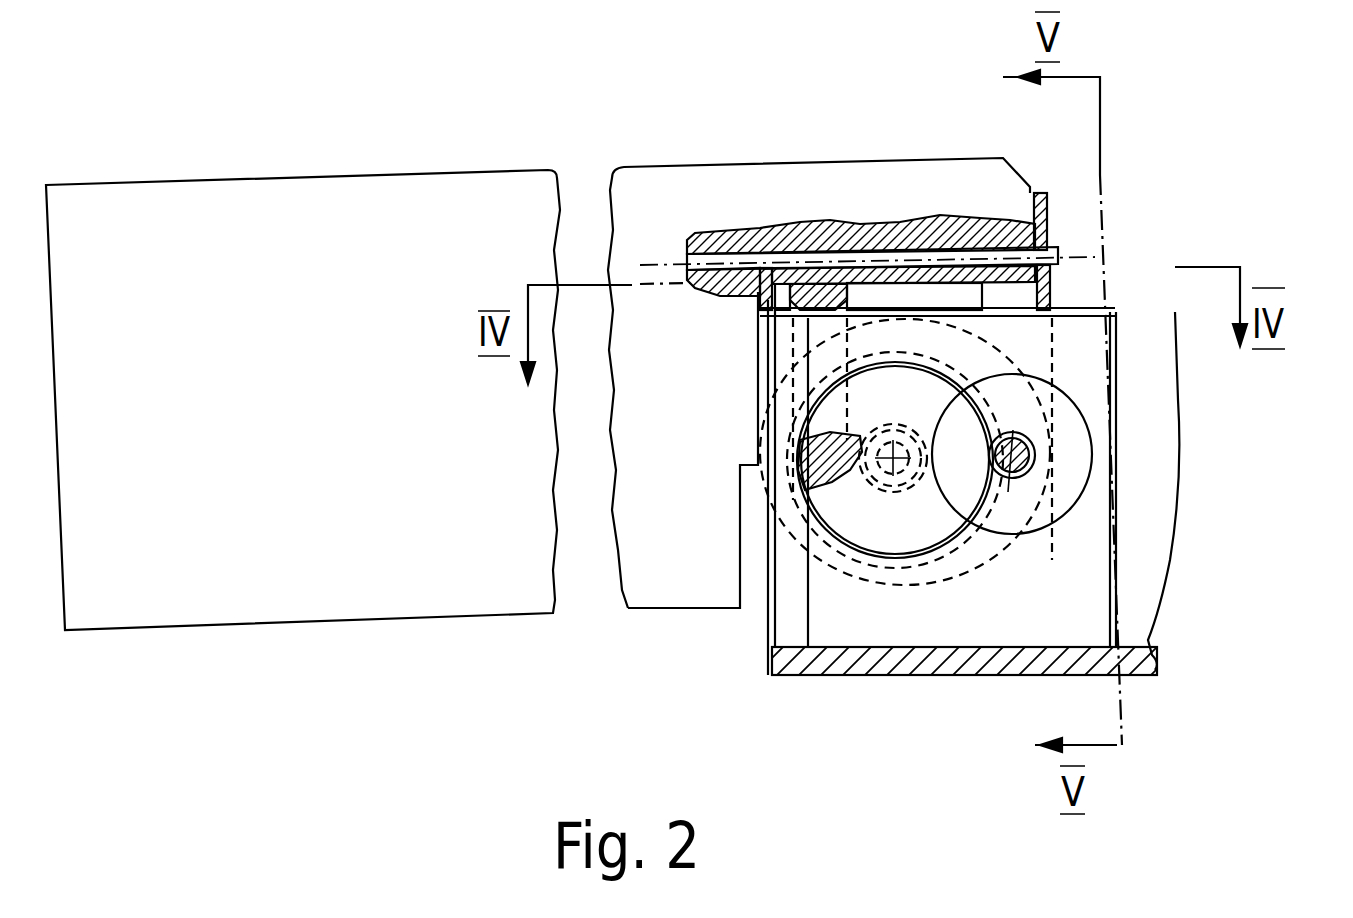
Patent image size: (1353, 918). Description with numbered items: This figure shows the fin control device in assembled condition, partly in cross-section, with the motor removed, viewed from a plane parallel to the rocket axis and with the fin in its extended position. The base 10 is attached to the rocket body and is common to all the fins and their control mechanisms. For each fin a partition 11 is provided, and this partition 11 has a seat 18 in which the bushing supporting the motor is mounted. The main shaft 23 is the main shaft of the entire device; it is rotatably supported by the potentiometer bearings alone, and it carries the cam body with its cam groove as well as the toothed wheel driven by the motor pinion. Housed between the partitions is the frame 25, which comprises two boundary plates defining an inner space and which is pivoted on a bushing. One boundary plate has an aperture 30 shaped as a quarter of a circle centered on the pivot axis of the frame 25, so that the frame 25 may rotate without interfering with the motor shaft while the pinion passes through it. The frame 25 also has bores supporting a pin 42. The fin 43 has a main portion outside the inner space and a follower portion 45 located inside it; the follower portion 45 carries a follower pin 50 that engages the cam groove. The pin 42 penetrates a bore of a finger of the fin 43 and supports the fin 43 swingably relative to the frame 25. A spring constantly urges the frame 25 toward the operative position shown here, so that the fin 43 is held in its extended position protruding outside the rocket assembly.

The base 10 is at (964, 676).
The partition 11 is at (1132, 610).
The seat 18 is at (1070, 490).
The main shaft 23 is at (893, 480).
The frame 25 is at (1055, 301).
The aperture 30 is at (1012, 410).
The pin 42 is at (1063, 250).
The fin 43 is at (543, 622).
The follower portion 45 is at (822, 303).
The follower pin 50 is at (800, 523).